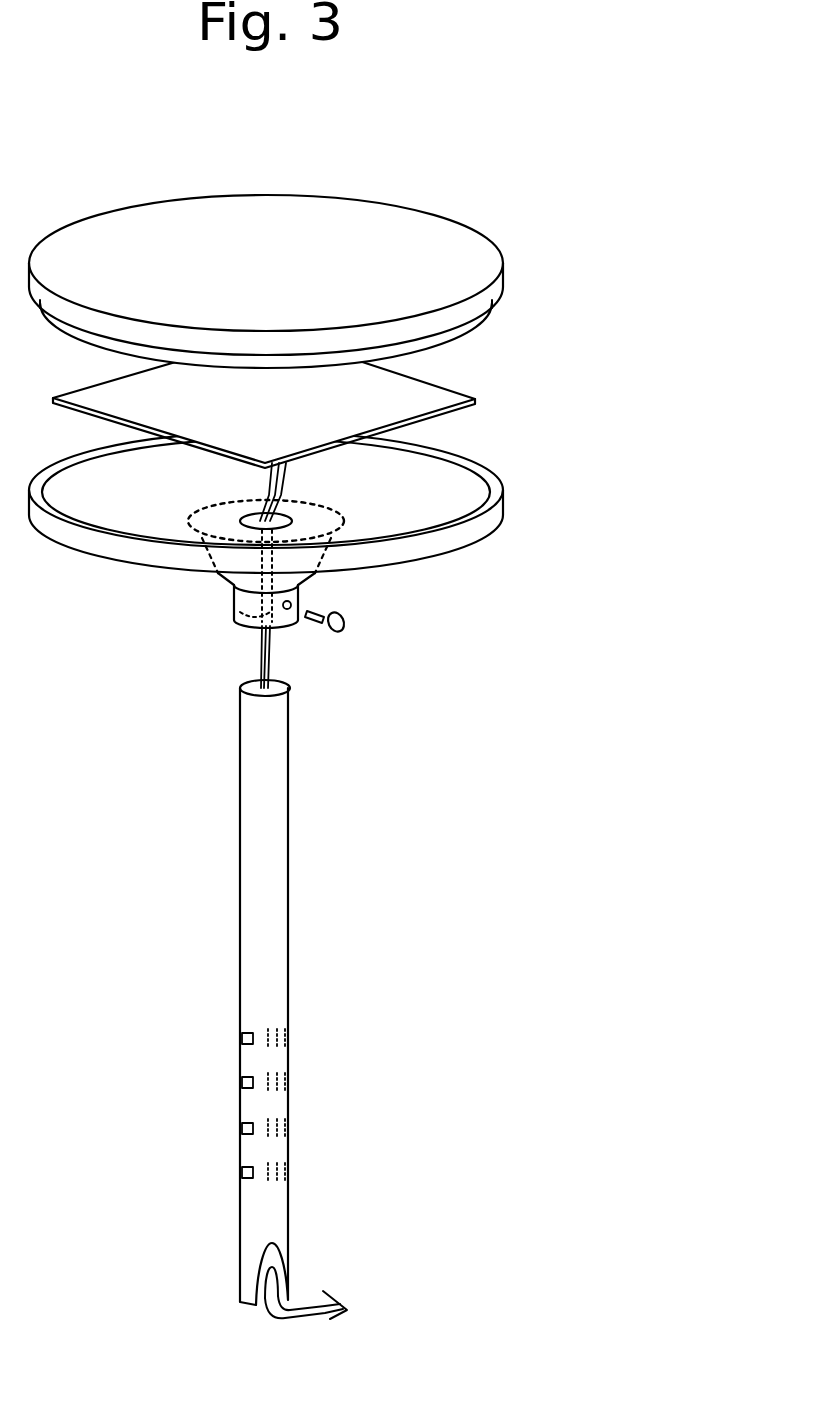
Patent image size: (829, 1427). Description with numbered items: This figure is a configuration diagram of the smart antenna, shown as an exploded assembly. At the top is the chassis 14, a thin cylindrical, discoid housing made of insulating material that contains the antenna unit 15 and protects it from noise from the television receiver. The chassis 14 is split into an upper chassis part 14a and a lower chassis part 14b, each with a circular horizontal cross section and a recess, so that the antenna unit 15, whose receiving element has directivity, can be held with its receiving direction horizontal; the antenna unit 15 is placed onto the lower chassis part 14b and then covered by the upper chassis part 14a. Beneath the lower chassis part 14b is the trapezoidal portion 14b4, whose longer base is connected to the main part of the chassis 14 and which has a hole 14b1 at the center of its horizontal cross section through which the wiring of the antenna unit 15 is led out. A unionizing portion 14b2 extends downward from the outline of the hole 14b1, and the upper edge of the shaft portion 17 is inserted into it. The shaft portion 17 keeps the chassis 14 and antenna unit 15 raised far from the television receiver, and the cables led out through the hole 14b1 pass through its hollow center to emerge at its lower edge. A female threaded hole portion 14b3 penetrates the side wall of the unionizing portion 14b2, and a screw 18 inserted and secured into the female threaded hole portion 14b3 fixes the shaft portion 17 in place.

The chassis 14 is at (514, 204).
The upper chassis part 14a is at (368, 222).
The lower chassis part 14b is at (458, 492).
The hole 14b1 is at (247, 625).
The unionizing portion 14b2 is at (233, 603).
The female threaded hole portion 14b3 is at (298, 619).
The trapezoidal portion 14b4 is at (309, 581).
The antenna unit 15 is at (452, 391).
The shaft portion 17 is at (292, 885).
The screw 18 is at (348, 626).